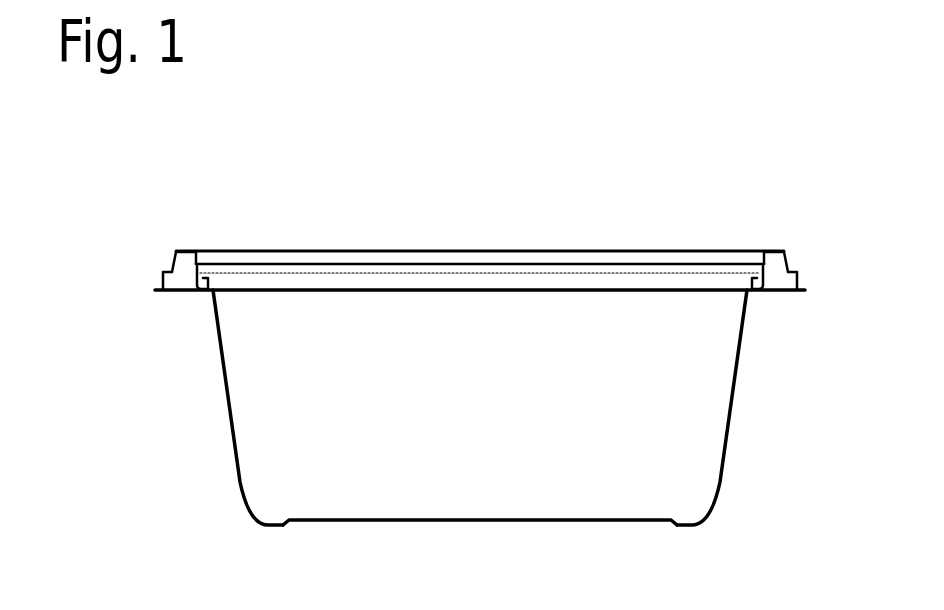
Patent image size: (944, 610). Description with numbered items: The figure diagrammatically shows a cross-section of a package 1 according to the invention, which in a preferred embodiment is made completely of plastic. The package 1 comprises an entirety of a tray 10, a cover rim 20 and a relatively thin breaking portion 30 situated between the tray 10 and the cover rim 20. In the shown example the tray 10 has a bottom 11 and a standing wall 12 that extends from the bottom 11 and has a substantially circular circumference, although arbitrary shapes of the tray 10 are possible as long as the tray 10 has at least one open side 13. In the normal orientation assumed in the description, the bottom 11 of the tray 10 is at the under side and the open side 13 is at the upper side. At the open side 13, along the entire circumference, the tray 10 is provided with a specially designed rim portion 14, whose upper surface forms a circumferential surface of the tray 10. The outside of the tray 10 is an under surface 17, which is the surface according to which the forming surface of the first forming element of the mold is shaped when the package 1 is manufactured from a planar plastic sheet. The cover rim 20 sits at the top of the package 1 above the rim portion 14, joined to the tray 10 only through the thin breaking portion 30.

The package 1 is at (647, 226).
The tray 10 is at (733, 393).
The bottom 11 is at (587, 523).
The standing wall 12 is at (725, 443).
The open side 13 is at (347, 227).
The rim portion 14 is at (778, 228).
The under surface 17 is at (227, 393).
The cover rim 20 is at (186, 250).
The breaking portion 30 is at (205, 275).